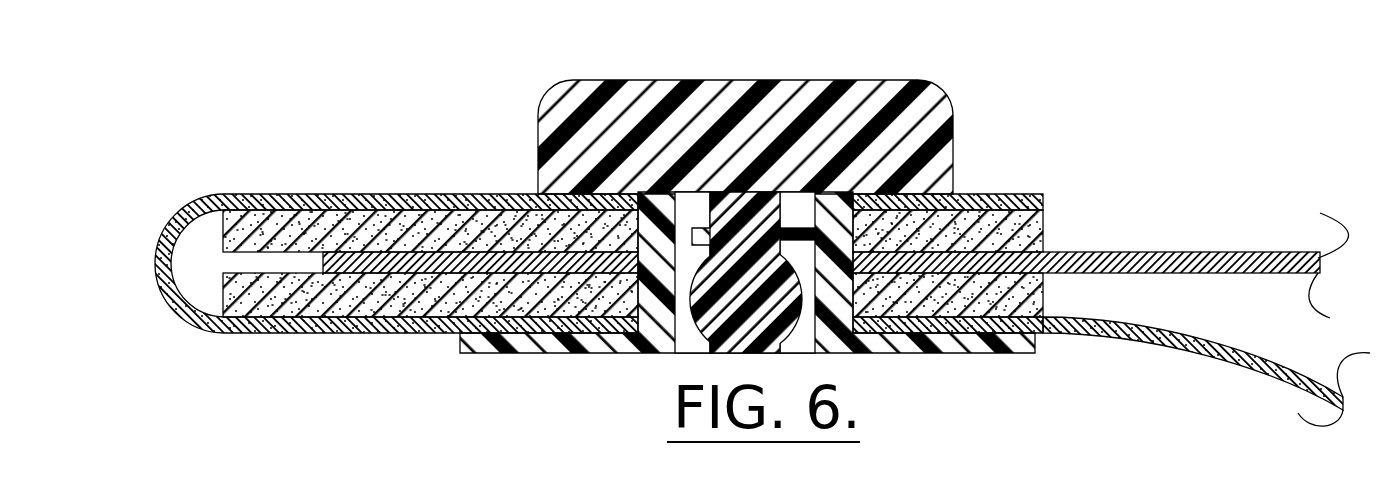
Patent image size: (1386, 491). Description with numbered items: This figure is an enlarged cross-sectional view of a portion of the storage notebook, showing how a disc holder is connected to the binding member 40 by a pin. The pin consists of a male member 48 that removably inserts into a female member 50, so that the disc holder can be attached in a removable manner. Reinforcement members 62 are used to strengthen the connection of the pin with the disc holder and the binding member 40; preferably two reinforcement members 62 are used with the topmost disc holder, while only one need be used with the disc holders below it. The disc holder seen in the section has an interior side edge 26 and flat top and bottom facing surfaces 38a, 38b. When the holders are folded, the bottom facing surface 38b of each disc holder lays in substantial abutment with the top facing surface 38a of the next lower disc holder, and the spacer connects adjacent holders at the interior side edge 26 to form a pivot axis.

The interior side edge 26 is at (323, 263).
The top facing surface 38a is at (1207, 252).
The bottom facing surface 38b is at (1278, 275).
The binding member 40 is at (183, 210).
The male member 48 is at (803, 98).
The female member 50 is at (992, 340).
The reinforcement member 62 is at (373, 227).